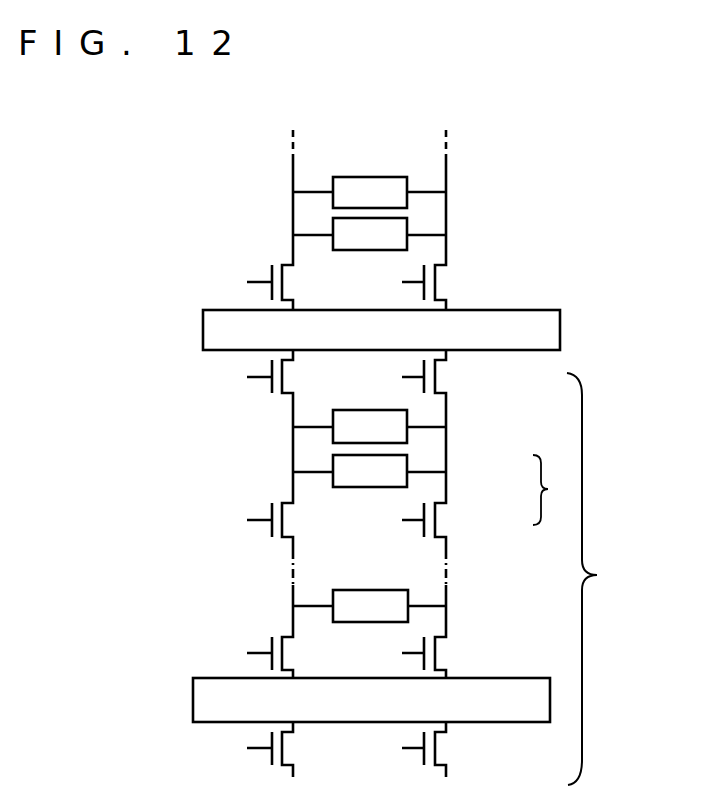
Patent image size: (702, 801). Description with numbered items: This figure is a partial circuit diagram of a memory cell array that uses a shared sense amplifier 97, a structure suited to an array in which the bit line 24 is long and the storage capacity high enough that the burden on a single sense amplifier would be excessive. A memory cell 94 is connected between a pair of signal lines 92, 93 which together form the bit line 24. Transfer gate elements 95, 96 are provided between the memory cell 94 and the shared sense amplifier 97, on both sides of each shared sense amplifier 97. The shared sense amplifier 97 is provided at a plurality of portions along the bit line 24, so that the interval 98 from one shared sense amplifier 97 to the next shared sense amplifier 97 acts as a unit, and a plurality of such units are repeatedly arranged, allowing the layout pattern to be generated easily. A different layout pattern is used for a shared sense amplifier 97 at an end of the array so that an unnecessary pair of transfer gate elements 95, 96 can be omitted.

The bit line 24 is at (556, 487).
The signal line 92 is at (446, 457).
The signal line 93 is at (293, 492).
The memory cell 94 is at (407, 430).
The transfer gate element 95 is at (450, 272).
The transfer gate element 96 is at (267, 275).
The shared sense amplifier 97 is at (560, 328).
The interval 98 is at (645, 591).